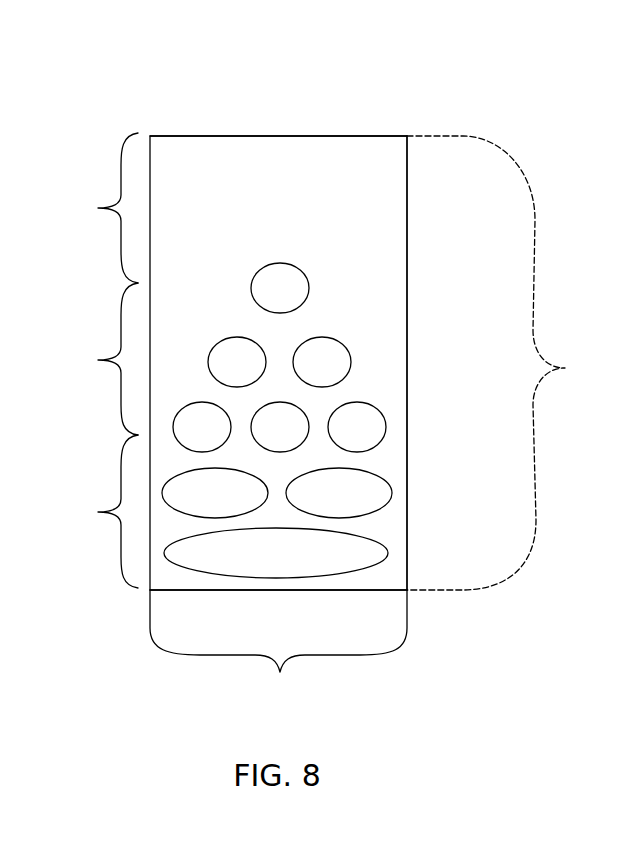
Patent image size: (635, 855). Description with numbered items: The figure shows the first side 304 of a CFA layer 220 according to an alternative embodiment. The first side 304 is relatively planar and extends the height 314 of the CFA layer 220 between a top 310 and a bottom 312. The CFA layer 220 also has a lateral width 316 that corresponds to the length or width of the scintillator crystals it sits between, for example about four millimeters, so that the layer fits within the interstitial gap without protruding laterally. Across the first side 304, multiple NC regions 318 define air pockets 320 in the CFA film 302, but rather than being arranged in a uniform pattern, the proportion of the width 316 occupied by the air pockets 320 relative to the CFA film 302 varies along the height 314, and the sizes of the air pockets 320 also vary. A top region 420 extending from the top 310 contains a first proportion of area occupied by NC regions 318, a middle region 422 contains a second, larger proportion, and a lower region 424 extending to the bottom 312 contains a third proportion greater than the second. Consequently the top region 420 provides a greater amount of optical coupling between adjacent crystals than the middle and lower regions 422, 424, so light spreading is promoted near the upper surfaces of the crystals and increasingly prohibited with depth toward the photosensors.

The CFA layer 220 is at (450, 77).
The CFA film 302 is at (393, 290).
The first side 304 is at (184, 152).
The top 310 is at (281, 134).
The bottom 312 is at (281, 592).
The height 314 is at (509, 363).
The lateral width 316 is at (278, 647).
The NC regions 318 is at (294, 281).
The air pockets 320 is at (373, 501).
The top region 420 is at (96, 208).
The middle region 422 is at (96, 359).
The lower region 424 is at (96, 511).